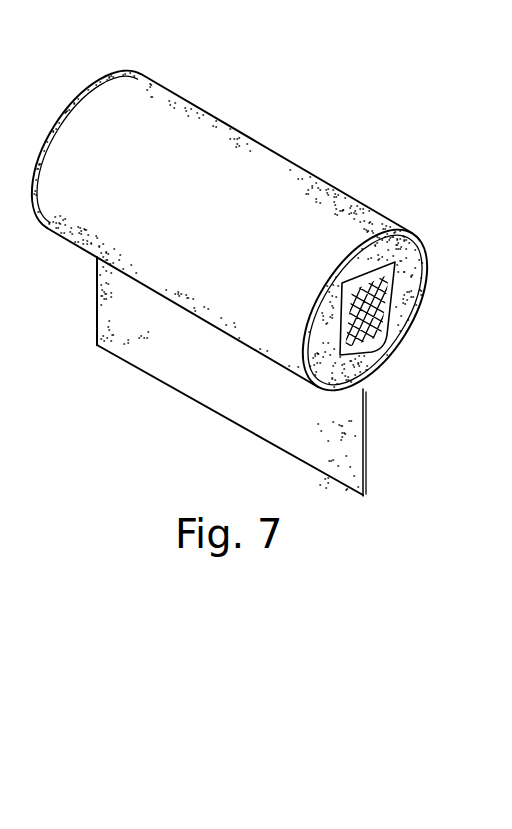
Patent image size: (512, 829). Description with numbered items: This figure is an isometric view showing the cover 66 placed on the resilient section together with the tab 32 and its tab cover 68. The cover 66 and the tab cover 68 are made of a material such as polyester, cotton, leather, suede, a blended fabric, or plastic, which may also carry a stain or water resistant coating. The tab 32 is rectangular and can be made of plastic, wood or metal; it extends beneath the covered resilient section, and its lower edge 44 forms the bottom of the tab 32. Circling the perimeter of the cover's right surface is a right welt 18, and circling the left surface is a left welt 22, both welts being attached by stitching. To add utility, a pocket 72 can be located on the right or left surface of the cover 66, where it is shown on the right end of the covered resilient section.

The end cap 18 is at (405, 233).
The housing rim 22 is at (60, 112).
The mounting plate 32 is at (184, 376).
The plate edge 44 is at (187, 397).
The cylindrical housing 66 is at (190, 155).
The plate flange 68 is at (117, 306).
The mesh window 72 is at (383, 310).